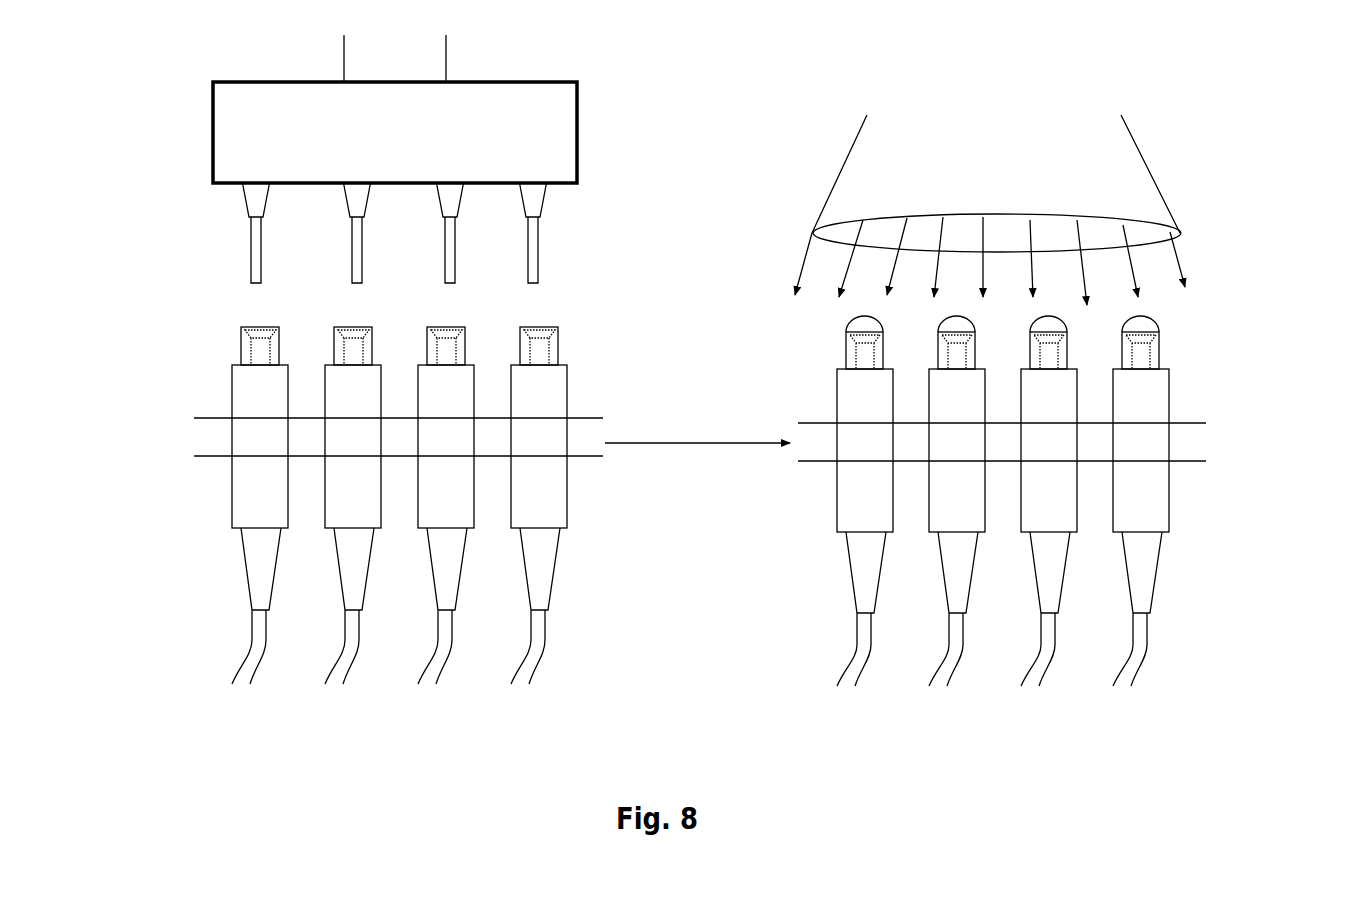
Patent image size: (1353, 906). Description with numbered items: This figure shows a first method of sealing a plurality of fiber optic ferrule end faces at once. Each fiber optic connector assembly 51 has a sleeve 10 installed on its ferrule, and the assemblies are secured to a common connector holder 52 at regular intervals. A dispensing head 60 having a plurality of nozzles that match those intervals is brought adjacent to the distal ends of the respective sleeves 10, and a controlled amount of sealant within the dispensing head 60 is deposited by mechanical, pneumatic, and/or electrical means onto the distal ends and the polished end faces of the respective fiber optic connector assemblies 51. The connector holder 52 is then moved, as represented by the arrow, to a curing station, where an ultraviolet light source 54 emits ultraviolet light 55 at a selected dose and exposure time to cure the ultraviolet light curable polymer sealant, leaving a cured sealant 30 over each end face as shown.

The sleeve 10 is at (245, 338).
The lens / encapsulating resin 30 is at (845, 320).
The fiber optic connector assembly 51 is at (258, 476).
The connector holder 52 is at (205, 434).
The ultraviolet light source 54 is at (1122, 178).
The ultraviolet light 55 is at (1180, 270).
The dispensing head 60 is at (577, 143).